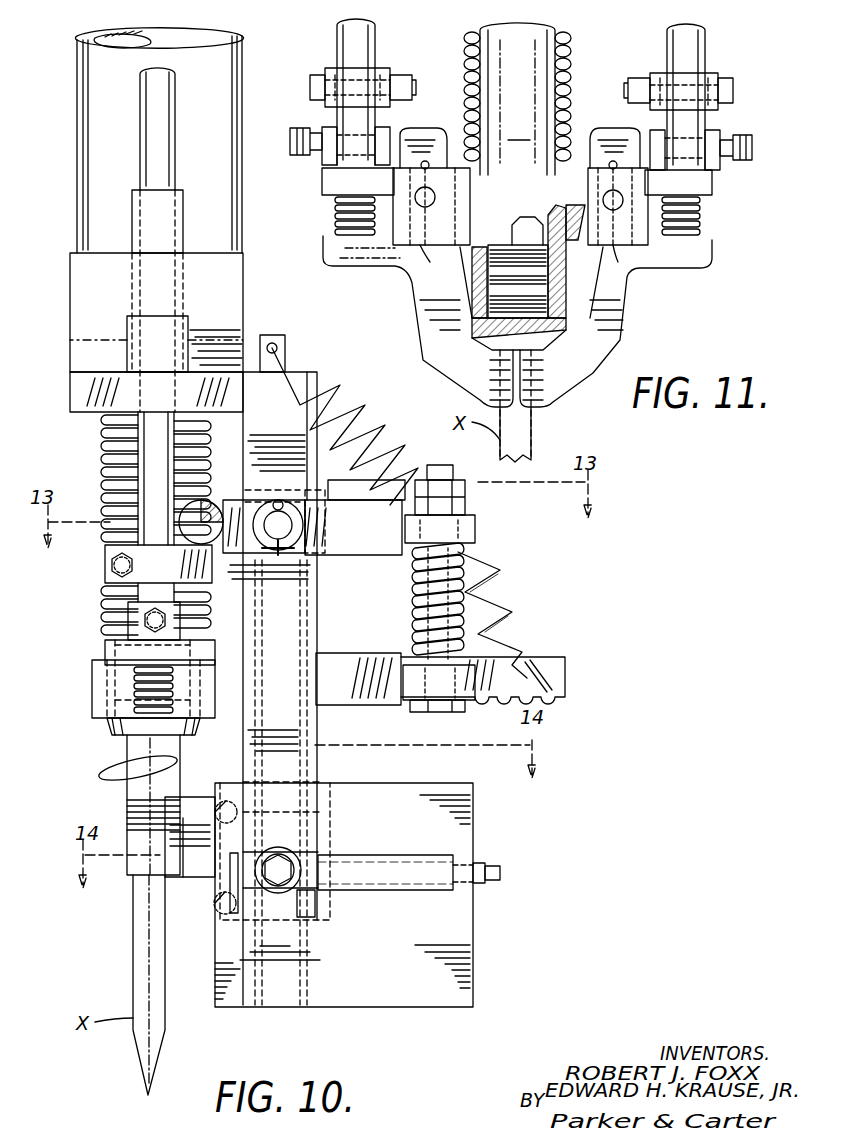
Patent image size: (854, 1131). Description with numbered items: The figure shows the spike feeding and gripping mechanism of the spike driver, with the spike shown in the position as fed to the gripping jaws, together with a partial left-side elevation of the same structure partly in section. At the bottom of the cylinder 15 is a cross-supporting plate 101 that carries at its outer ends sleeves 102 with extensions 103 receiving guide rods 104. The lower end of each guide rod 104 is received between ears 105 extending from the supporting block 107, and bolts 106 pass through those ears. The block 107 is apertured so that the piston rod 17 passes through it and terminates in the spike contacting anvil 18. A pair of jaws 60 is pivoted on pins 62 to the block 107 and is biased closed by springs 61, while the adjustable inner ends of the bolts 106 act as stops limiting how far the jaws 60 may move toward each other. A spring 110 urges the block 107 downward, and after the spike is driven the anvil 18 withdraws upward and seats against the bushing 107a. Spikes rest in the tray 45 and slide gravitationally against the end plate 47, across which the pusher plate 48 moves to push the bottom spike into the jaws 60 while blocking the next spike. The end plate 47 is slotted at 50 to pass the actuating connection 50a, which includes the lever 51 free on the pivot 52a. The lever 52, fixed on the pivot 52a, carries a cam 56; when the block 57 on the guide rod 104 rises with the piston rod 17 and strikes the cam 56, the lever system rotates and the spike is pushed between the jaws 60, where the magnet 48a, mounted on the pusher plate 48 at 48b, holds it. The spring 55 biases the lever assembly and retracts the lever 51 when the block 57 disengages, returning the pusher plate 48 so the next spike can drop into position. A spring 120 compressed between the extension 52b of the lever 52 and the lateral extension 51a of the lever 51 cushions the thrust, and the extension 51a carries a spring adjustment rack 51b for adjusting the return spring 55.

In FIG. 10, the cylinder 15 is at (77, 100).
In FIG. 10, the piston rod 17 is at (105, 700).
In FIG. 11, the piston rod 17 is at (517, 99).
In FIG. 10, the spike contacting anvil 18 is at (115, 732).
In FIG. 11, the spike contacting anvil 18 is at (560, 332).
In FIG. 10, the spike tray 45 is at (275, 669).
In FIG. 10, the end plate 47 is at (470, 942).
In FIG. 10, the pusher plate 48 is at (338, 880).
In FIG. 10, the permanent holding magnet 48a is at (185, 890).
In FIG. 10, the mounting element 48b is at (215, 805).
In FIG. 10, the slot 50 is at (420, 885).
In FIG. 10, the actuating connection 50a is at (280, 855).
In FIG. 10, the lever 51 is at (320, 782).
In FIG. 10, the lateral extension 51a is at (390, 705).
In FIG. 10, the spring adjustment rack 51b is at (555, 665).
In FIG. 10, the lever 52 is at (360, 552).
In FIG. 10, the pivot 52a is at (318, 555).
In FIG. 10, the extension 52b is at (470, 530).
In FIG. 10, the spring 55 is at (495, 592).
In FIG. 10, the cam 56 is at (205, 520).
In FIG. 10, the block 57 is at (212, 565).
In FIG. 11, the block 57 is at (375, 88).
In FIG. 10, the jaws 60 is at (143, 885).
In FIG. 11, the jaws 60 is at (420, 358).
In FIG. 10, the springs 61 is at (140, 690).
In FIG. 11, the springs 61 is at (340, 208).
In FIG. 11, the pins 62 is at (605, 200).
In FIG. 10, the cross-supporting plate 101 is at (78, 404).
In FIG. 10, the sleeve 102 is at (127, 330).
In FIG. 10, the extension 103 is at (132, 285).
In FIG. 10, the guide rod 104 is at (140, 140).
In FIG. 11, the guide rod 104 is at (345, 52).
In FIG. 10, the ears 105 is at (130, 617).
In FIG. 11, the ears 105 is at (328, 130).
In FIG. 10, the bolts 106 is at (145, 641).
In FIG. 11, the bolts 106 is at (296, 146).
In FIG. 10, the supporting block 107 is at (112, 670).
In FIG. 11, the supporting block 107 is at (325, 183).
In FIG. 11, the bushing 107a is at (565, 240).
In FIG. 10, the spring 110 is at (100, 470).
In FIG. 11, the spring 110 is at (575, 58).
In FIG. 10, the spring 120 is at (415, 612).